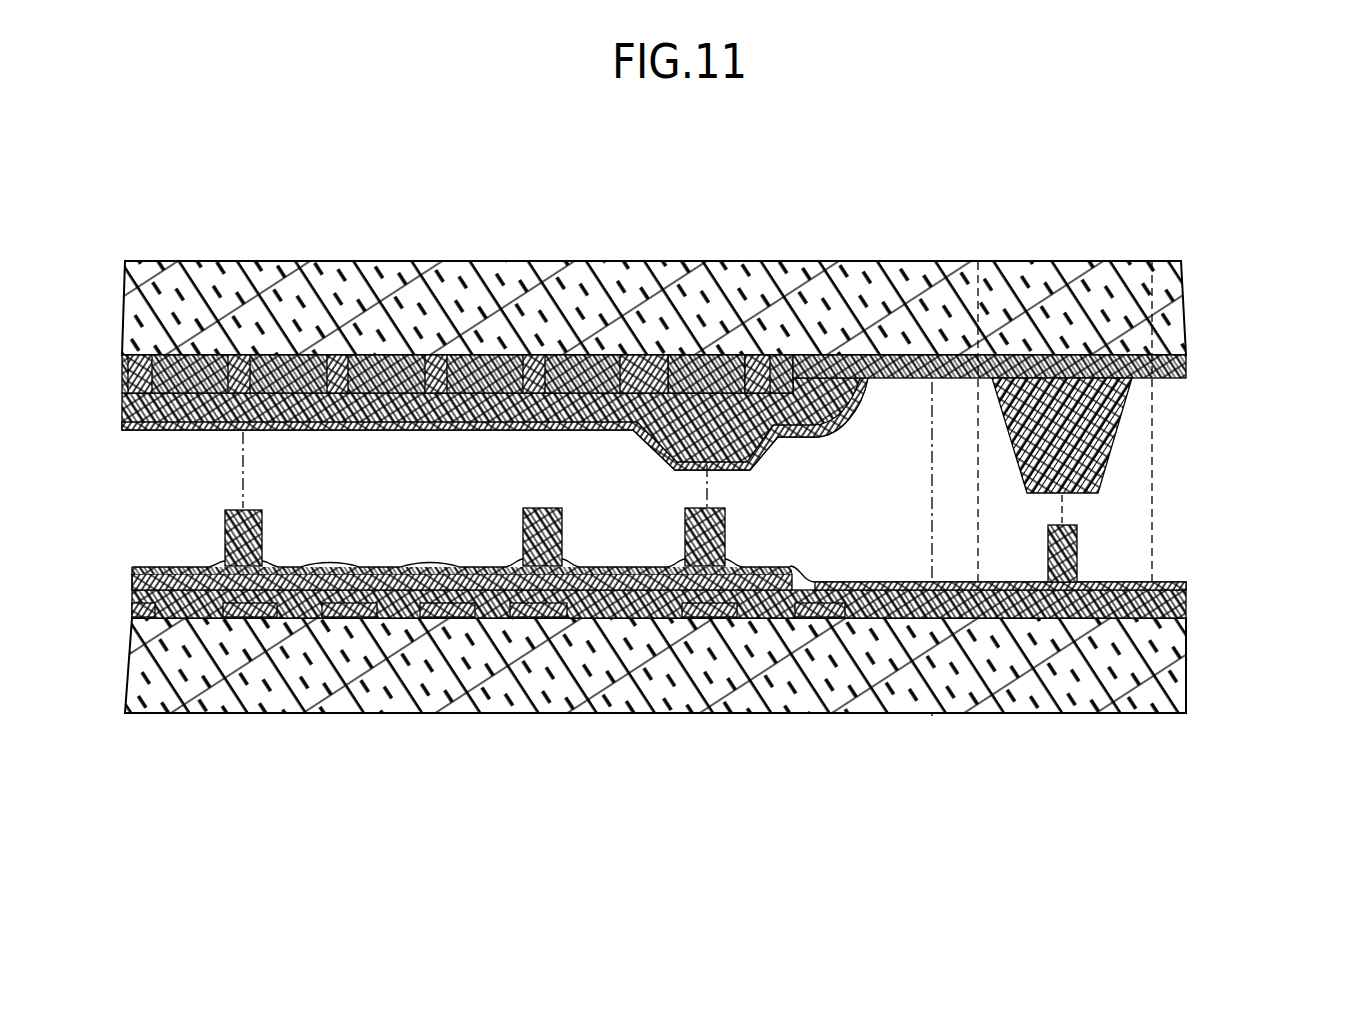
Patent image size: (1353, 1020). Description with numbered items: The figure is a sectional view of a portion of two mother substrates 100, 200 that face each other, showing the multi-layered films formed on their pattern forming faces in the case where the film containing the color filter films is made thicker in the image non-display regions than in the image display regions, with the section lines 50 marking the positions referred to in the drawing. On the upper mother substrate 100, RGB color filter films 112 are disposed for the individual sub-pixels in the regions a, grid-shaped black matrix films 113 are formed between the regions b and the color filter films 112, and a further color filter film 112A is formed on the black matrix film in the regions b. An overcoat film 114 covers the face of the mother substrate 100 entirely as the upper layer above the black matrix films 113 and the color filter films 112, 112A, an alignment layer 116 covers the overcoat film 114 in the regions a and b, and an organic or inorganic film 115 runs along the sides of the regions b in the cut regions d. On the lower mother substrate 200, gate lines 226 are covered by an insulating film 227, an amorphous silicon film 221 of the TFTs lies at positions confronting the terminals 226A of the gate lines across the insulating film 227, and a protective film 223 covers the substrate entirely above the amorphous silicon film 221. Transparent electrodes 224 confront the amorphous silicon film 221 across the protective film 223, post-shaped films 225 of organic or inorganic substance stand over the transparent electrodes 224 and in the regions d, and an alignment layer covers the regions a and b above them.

The mother substrate 100 is at (660, 262).
The RGB color filter films 112 is at (180, 362).
The color filter film 112A is at (717, 358).
The black matrix films 113 is at (236, 365).
The overcoat film 114 is at (1055, 358).
The organic film 115 is at (1110, 425).
The alignment layer 116 is at (835, 416).
The sealing region 50 is at (978, 252).
The mother substrate 200 is at (1190, 670).
The amorphous silicon film 221 is at (148, 578).
The protective film 223 is at (878, 580).
The transparent electrodes 224 is at (380, 572).
The post-shaped films 225 is at (541, 506).
The gate lines 226 is at (632, 578).
The terminals of the gate lines 226A is at (148, 621).
The insulating film 227 is at (1061, 622).